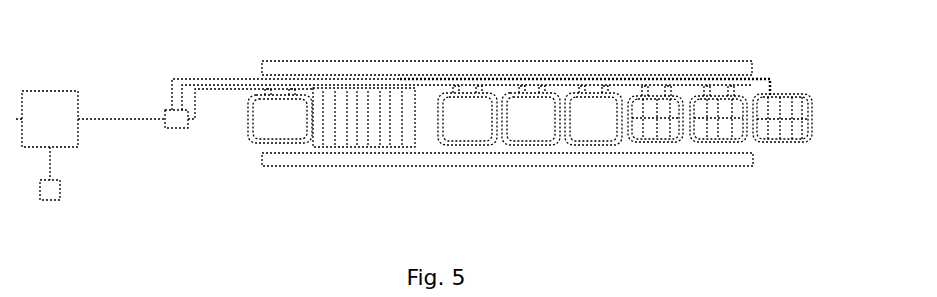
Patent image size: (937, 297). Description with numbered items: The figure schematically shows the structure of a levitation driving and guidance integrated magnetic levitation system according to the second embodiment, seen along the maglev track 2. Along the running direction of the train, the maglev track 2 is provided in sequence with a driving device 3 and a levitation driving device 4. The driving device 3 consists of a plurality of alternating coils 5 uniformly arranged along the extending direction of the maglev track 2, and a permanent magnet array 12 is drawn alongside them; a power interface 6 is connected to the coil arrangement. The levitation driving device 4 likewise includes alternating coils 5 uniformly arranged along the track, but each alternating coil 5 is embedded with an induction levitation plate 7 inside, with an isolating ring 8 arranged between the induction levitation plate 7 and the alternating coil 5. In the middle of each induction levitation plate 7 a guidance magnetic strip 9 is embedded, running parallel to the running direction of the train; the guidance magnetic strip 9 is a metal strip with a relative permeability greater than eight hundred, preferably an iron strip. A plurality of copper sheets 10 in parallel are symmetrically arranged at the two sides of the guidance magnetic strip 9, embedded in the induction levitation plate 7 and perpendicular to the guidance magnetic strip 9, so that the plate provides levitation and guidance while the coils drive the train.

The maglev track 2 is at (549, 61).
The driving device 3 is at (516, 153).
The levitation driving device 4 is at (723, 82).
The alternating coil 5 is at (808, 87).
The power interface 6 is at (737, 87).
The induction levitation plate 7 is at (791, 137).
The isolating ring 8 is at (819, 141).
The guidance magnetic strip 9 is at (807, 108).
The copper sheet 10 is at (765, 134).
The permanent magnet array 12 is at (363, 112).